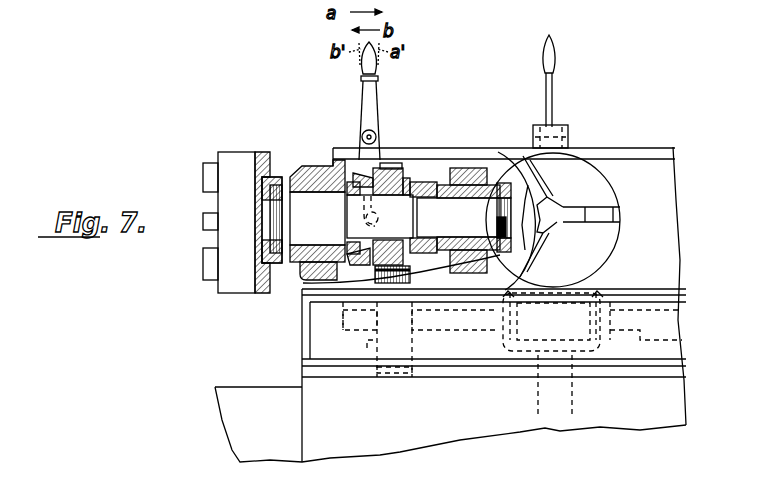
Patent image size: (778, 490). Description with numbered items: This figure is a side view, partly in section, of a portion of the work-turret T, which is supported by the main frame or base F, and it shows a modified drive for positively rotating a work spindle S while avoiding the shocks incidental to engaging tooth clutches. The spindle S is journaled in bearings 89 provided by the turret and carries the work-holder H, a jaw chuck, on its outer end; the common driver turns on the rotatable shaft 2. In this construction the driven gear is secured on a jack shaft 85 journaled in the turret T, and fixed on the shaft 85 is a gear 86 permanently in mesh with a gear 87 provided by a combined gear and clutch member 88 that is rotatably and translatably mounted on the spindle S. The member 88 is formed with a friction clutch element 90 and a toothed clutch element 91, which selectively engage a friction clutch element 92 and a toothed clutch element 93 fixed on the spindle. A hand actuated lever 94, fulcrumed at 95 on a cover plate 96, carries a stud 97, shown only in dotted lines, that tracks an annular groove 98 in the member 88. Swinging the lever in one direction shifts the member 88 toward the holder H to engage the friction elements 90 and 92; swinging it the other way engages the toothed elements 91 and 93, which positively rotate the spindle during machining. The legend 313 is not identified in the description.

The rotatable shaft 2 is at (577, 397).
The jack shafts 85 is at (547, 327).
The gear 86 is at (377, 339).
The pocket 313 is at (553, 321).
The gear 87 is at (400, 168).
The combined gear and clutch member 88 is at (410, 178).
The bearings 89 is at (308, 163).
The friction clutch element 90 is at (373, 262).
The toothed clutch element 91 is at (407, 181).
The friction clutch element 92 is at (352, 172).
The toothed clutch element 93 is at (422, 235).
The hand actuated lever 94 is at (379, 101).
The fulcrum 95 is at (378, 132).
The cover plate 96 is at (636, 147).
The stud 97 is at (380, 216).
The annular groove 98 is at (367, 177).
The work-holder H is at (411, 222).
The work spindle S is at (317, 218).
The work-turret T is at (673, 248).
The main frame F is at (450, 424).